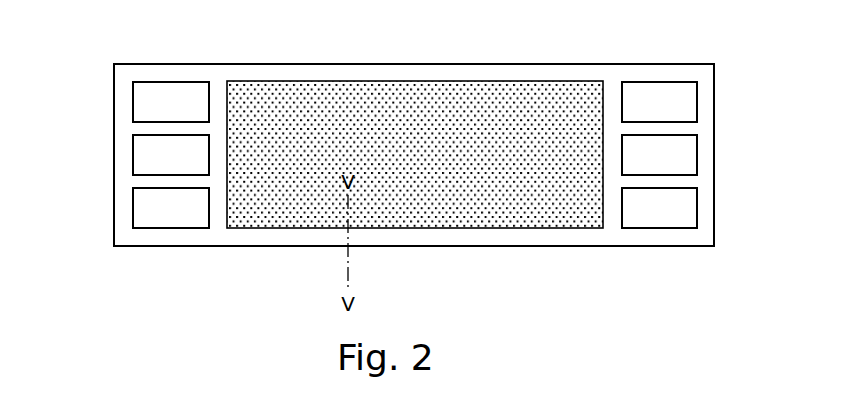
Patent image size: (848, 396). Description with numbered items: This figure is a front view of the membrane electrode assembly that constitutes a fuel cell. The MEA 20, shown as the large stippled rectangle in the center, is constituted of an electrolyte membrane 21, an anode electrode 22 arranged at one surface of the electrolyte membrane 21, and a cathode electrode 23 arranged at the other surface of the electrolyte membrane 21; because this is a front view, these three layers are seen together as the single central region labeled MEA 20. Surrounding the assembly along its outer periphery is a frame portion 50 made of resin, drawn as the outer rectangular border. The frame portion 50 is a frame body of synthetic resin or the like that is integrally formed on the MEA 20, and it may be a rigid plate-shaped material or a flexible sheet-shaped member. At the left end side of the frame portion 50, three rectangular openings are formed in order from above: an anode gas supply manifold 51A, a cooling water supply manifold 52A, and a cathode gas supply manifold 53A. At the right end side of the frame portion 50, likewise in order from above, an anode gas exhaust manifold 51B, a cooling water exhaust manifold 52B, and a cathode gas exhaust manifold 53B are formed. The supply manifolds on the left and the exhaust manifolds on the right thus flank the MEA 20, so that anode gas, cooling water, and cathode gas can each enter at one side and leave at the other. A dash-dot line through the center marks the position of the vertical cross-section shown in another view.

The frame portion 50 is at (231, 72).
The MEA 20 is at (307, 100).
The electrolyte membrane 21 is at (415, 154).
The anode electrode 22 is at (415, 154).
The cathode electrode 23 is at (415, 154).
The anode gas supply manifold 51A is at (133, 97).
The cooling water supply manifold 52A is at (133, 151).
The cathode gas supply manifold 53A is at (133, 205).
The anode gas exhaust manifold 51B is at (697, 110).
The cooling water exhaust manifold 52B is at (697, 164).
The cathode gas exhaust manifold 53B is at (697, 218).